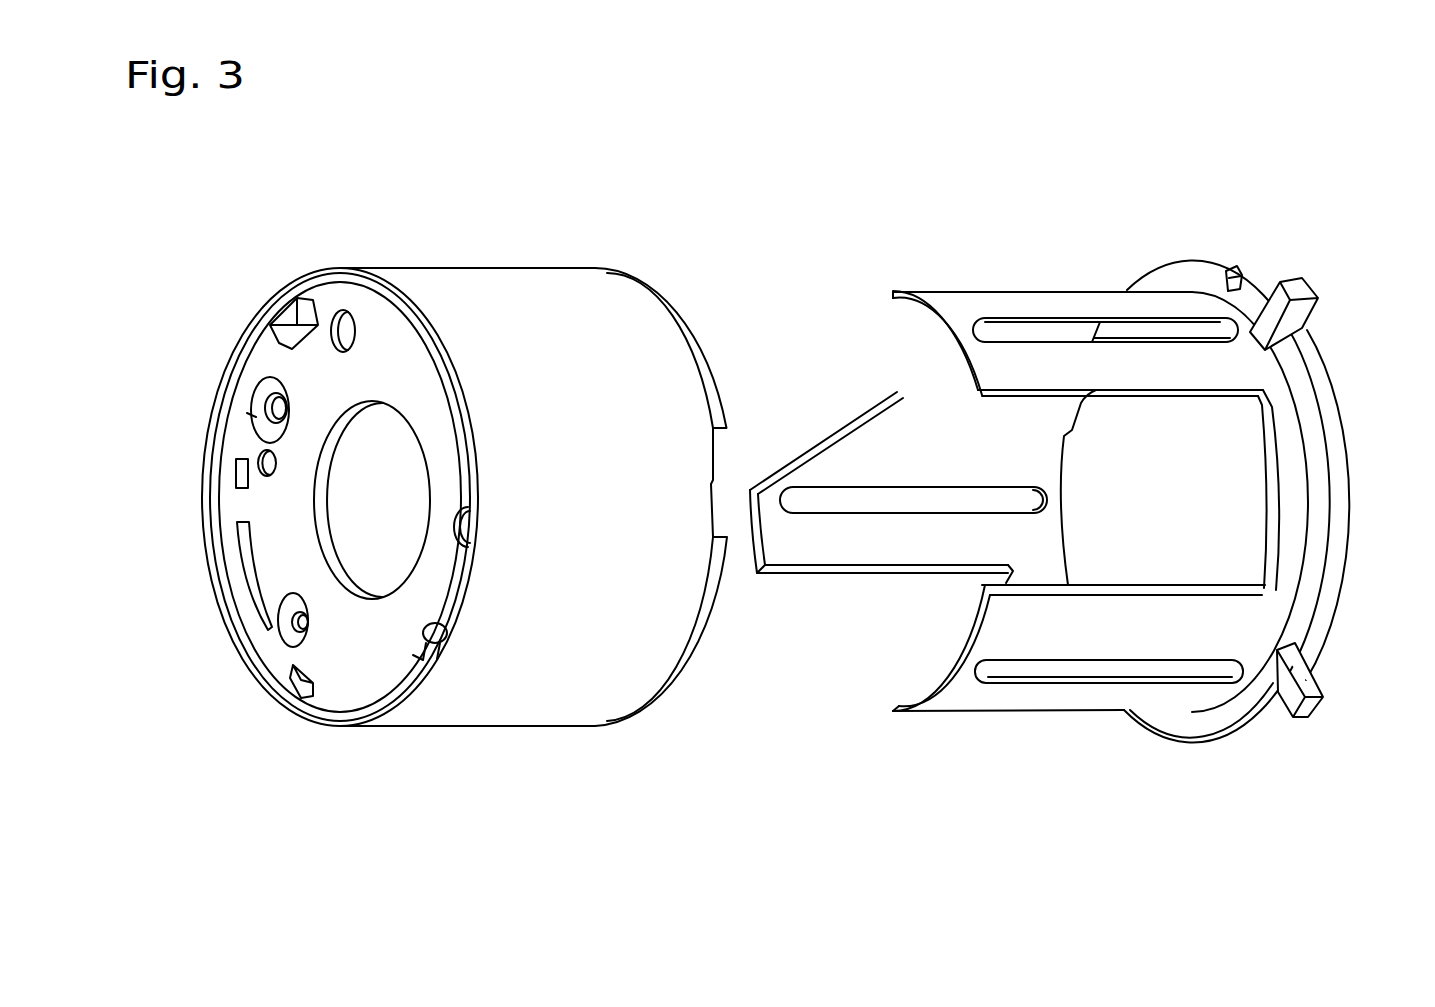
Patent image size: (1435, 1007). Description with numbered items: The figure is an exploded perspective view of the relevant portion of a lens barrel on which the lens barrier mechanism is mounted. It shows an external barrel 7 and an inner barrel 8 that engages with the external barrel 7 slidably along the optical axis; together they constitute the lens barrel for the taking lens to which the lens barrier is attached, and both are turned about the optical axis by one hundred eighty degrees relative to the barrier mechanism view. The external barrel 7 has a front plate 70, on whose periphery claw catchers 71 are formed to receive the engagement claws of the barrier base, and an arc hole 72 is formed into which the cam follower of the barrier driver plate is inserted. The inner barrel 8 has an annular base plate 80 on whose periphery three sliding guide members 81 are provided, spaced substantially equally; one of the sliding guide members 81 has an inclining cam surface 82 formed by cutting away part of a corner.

The external barrel 7 is at (478, 268).
The front plate 70 is at (383, 320).
The claw catchers 71 is at (280, 325).
The arc hole 72 is at (245, 572).
The inner barrel 8 is at (1018, 290).
The annular base plate 80 is at (1330, 421).
The sliding guide members 81 is at (1099, 297).
The inclining cam surface 82 is at (795, 455).